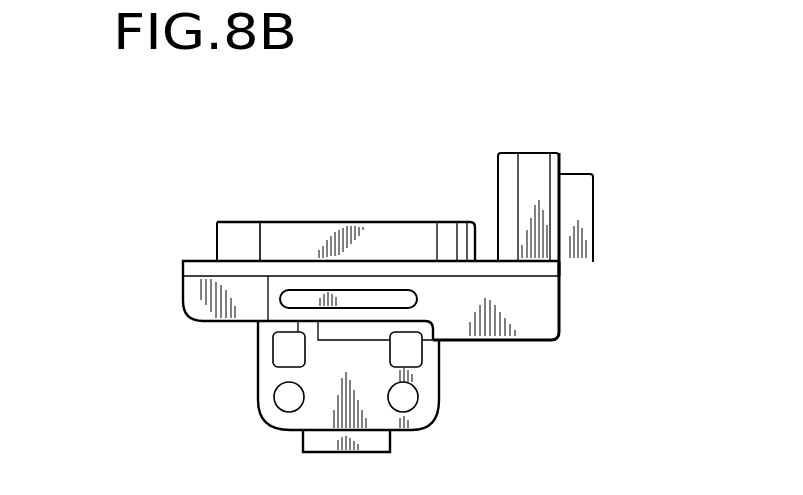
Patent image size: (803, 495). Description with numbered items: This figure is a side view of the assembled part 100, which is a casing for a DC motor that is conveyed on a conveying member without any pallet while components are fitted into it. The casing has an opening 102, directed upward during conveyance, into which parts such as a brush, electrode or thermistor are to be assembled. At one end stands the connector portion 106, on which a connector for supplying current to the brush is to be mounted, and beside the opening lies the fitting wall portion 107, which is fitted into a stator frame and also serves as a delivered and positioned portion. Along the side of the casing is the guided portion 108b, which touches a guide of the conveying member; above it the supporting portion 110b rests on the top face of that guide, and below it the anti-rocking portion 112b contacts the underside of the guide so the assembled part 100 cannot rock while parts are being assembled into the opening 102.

The assembled part 100 is at (553, 367).
The opening 102 is at (322, 193).
The connector portion 106 is at (593, 175).
The fitting wall portion 107 is at (228, 235).
The guided portion 108b is at (517, 284).
The supporting portion 110b is at (292, 264).
The anti-rocking portion 112b is at (417, 293).